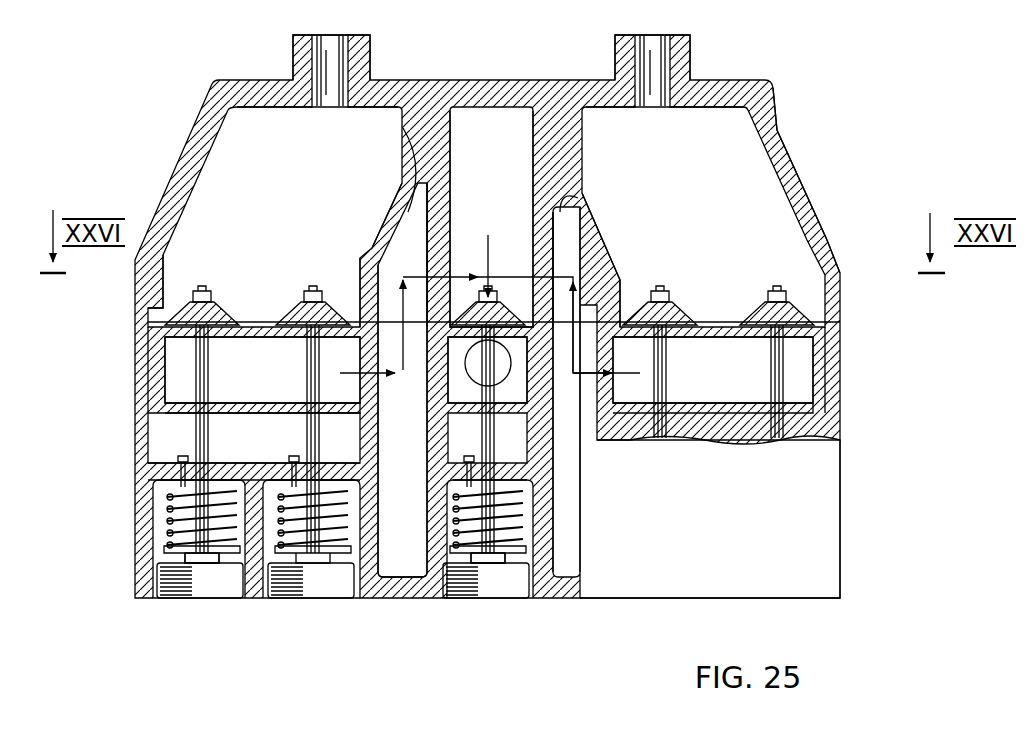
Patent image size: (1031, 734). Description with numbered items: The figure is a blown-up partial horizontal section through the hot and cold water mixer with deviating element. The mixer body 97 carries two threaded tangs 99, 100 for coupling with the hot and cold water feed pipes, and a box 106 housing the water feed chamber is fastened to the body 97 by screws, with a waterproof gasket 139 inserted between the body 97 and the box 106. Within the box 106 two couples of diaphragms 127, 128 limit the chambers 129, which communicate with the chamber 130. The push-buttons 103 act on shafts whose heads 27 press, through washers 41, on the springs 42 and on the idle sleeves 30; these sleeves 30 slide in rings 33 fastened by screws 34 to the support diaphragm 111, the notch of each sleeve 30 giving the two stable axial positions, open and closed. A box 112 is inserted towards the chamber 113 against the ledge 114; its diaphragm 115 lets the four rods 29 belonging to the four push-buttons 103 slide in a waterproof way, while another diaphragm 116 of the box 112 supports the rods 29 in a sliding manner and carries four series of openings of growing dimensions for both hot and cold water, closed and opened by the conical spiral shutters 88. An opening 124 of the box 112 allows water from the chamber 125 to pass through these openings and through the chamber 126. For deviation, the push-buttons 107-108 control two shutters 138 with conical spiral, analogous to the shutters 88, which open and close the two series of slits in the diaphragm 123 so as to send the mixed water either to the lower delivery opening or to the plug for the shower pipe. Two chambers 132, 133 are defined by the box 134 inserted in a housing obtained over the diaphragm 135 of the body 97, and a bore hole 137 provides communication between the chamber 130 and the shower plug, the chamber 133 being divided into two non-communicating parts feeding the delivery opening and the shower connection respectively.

The head 27 is at (315, 565).
The rod 29 is at (195, 442).
The idle sleeve 30 is at (180, 510).
The ring 33 is at (228, 563).
The screw 34 is at (180, 460).
The washer 41 is at (170, 551).
The spring 42 is at (173, 530).
The shutter 88 is at (205, 288).
The body 97 is at (815, 578).
The threaded tang 99 is at (372, 47).
The threaded tang 100 is at (690, 52).
The push-button 103 is at (187, 590).
The box 106 is at (779, 146).
The push-buttons 107-108 is at (493, 560).
The support diaphragm 111 is at (232, 465).
The box 112 is at (148, 360).
The chamber 113 is at (397, 418).
The ledge 114 is at (143, 393).
The diaphragm 115 is at (175, 418).
The diaphragm 116 is at (256, 322).
The diaphragm 123 is at (640, 357).
The opening 124 is at (374, 240).
The chamber 125 is at (278, 131).
The chamber 126 is at (264, 396).
The diaphragm 127 is at (338, 242).
The diaphragm 128 is at (462, 240).
The chamber 129 is at (402, 130).
The chamber 130 is at (482, 124).
The chamber 132 is at (402, 380).
The chamber 133 is at (572, 470).
The box 134 is at (575, 465).
The diaphragm 135 is at (525, 575).
The bore hole 137 is at (465, 373).
The shutter 138 is at (516, 292).
The waterproof gasket 139 is at (842, 324).